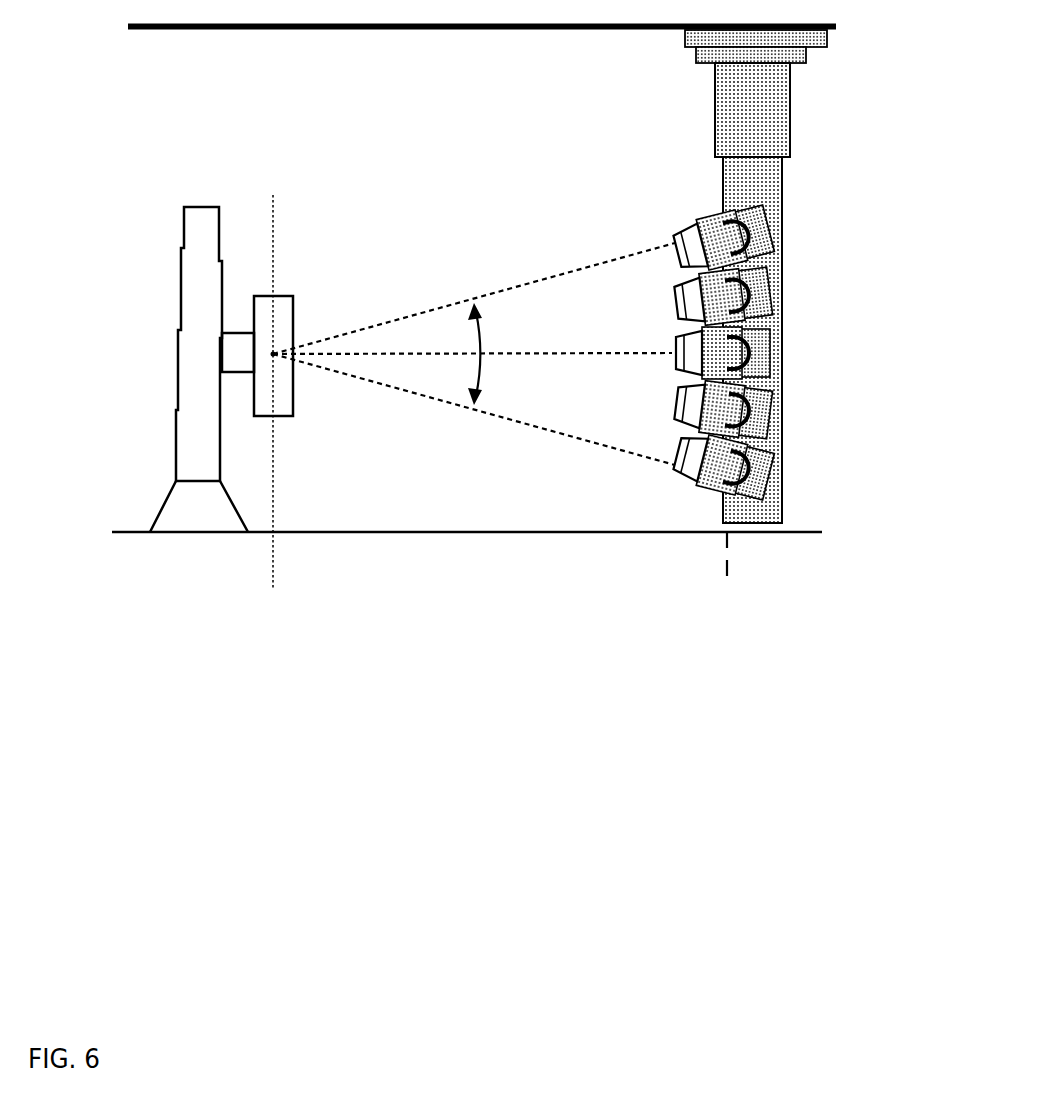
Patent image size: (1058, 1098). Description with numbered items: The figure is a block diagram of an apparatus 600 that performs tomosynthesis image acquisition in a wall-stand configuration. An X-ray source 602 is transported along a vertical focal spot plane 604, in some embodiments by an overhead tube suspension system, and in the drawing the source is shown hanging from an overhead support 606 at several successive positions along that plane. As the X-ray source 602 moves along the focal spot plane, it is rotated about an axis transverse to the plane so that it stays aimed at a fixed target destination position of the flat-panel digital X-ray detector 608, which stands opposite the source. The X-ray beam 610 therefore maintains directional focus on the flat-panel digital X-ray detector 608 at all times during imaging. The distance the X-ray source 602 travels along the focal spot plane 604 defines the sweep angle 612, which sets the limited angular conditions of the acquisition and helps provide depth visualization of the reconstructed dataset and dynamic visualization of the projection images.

The apparatus 600 is at (807, 1005).
The X-ray source 602 is at (782, 212).
The vertical focal spot plane 604 is at (751, 667).
The support arm 606 is at (792, 119).
The flat-panel digital X-ray detector 608 is at (285, 296).
The X-ray beam 610 is at (610, 268).
The sweep angle 612 is at (583, 402).